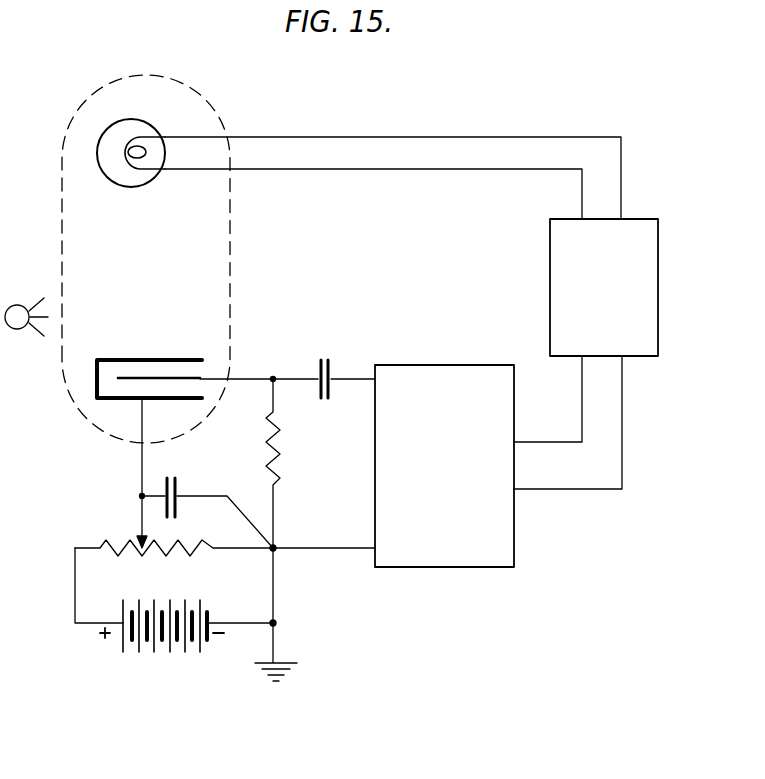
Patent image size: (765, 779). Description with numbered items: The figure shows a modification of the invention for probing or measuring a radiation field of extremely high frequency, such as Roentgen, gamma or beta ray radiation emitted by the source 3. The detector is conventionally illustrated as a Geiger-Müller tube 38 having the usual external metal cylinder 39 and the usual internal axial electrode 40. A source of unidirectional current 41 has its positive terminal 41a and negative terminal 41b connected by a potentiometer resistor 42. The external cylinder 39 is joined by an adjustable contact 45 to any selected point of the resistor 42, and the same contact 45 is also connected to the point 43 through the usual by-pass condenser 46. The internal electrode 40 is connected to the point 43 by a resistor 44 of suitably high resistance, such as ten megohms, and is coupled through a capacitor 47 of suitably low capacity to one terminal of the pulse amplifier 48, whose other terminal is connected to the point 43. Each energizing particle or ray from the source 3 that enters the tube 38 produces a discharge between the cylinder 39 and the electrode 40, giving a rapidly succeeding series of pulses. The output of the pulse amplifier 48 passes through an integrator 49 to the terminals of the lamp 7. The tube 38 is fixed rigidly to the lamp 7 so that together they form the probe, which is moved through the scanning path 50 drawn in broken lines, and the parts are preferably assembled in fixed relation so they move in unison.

The lamp 7 is at (124, 127).
The scanning path 50 is at (232, 251).
The source 3 is at (26, 317).
The Geiger-Müller tube 38 is at (182, 353).
The external metal cylinder 39 is at (109, 358).
The internal axial electrode 40 is at (147, 376).
The source of unidirectional current 41 is at (183, 642).
The positive terminal 41a is at (122, 625).
The negative terminal 41b is at (276, 623).
The potentiometer resistor 42 is at (117, 558).
The point 43 is at (275, 550).
The resistor 44 is at (283, 453).
The adjustable contact 45 is at (142, 463).
The by-pass condenser 46 is at (178, 492).
The capacitor 47 is at (329, 359).
The pulse amplifier 48 is at (498, 461).
The integrator 49 is at (411, 246).